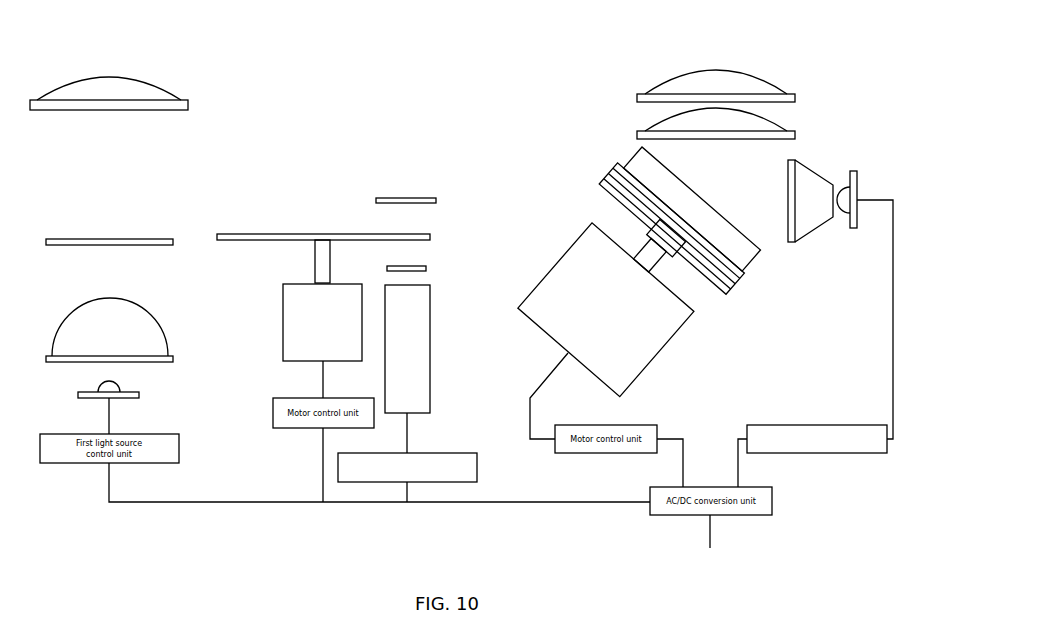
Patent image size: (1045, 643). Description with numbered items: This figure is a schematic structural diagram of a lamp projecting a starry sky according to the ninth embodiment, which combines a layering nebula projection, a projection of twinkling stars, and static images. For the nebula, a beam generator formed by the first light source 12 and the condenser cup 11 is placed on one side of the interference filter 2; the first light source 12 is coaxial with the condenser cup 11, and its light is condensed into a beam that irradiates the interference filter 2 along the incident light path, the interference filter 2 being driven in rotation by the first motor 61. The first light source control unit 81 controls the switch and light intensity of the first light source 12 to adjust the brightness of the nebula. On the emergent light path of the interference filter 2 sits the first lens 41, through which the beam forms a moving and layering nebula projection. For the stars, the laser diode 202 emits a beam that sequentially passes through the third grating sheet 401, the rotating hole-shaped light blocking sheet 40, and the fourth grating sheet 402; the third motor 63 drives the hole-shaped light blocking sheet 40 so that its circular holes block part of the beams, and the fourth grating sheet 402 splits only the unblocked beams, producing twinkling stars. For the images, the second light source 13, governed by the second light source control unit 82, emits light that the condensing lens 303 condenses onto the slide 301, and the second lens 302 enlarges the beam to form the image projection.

The second lens 302 is at (133, 91).
The slide 301 is at (138, 241).
The condensing lens 303 is at (128, 333).
The second light source 13 is at (128, 393).
The hole-shaped light blocking sheet 40 is at (370, 236).
The fourth grating sheet 402 is at (405, 200).
The third grating sheet 401 is at (418, 268).
The third motor 63 is at (313, 308).
The laser diode 202 is at (415, 343).
The second light source control unit 82 is at (432, 450).
The first motor 61 is at (603, 289).
The interference filter 2 is at (712, 207).
The first lens 41 is at (751, 90).
The condenser cup 11 is at (822, 190).
The first light source 12 is at (853, 190).
The first light source control unit 81 is at (815, 425).